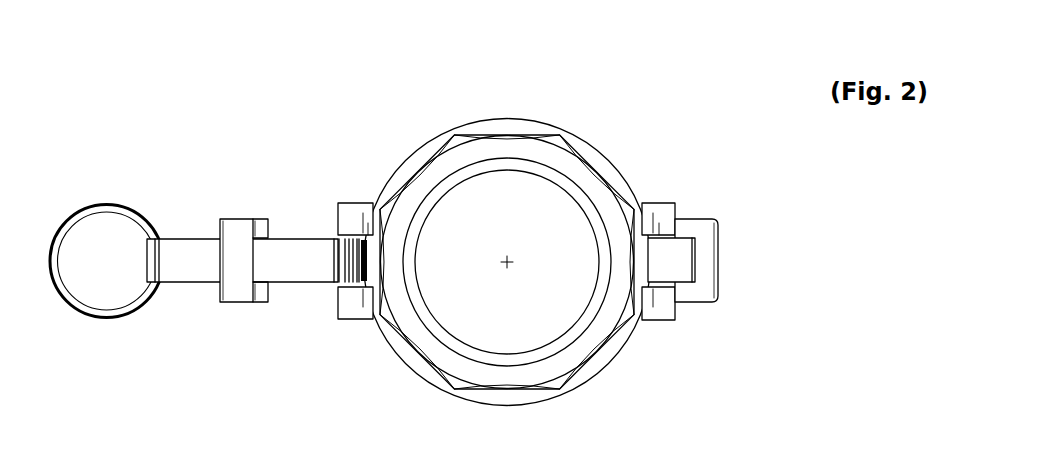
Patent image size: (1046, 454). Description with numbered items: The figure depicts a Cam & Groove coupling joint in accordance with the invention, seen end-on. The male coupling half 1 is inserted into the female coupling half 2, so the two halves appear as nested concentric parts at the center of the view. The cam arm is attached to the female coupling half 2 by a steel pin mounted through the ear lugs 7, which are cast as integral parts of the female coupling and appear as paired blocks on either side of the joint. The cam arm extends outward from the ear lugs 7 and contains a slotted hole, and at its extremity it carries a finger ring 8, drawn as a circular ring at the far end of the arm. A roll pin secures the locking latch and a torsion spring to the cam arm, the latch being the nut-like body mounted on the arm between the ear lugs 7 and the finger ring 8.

The male coupling half 1 is at (547, 147).
The female coupling half 2 is at (605, 165).
The ear lugs 7 is at (347, 205).
The finger ring 8 is at (120, 200).